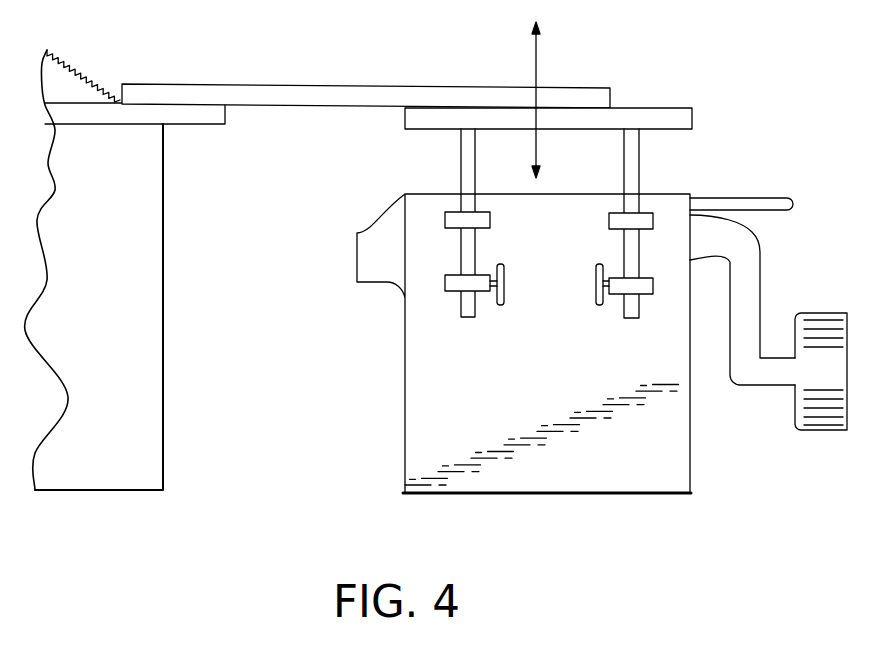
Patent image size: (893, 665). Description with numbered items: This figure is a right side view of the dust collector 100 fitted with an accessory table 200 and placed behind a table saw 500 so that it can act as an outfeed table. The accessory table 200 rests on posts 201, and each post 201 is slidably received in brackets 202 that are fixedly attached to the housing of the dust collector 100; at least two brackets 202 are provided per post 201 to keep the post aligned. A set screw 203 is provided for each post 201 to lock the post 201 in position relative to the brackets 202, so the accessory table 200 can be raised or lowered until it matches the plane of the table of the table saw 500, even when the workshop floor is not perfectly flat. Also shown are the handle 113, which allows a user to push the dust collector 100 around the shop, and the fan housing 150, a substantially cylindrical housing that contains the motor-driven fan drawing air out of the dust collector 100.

The dust collector 100 is at (388, 381).
The handle 113 is at (740, 197).
The fan housing 150 is at (823, 422).
The accessory table 200 is at (657, 105).
The post 201 is at (460, 153).
The bracket 202 is at (455, 222).
The set screw 203 is at (597, 288).
The table saw 500 is at (162, 85).